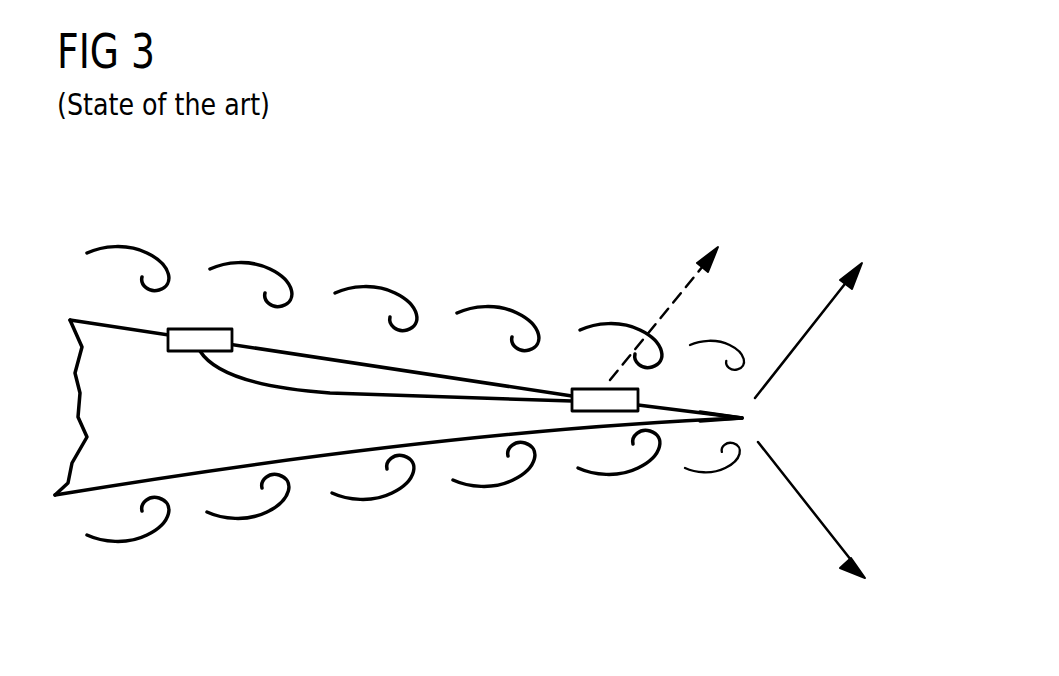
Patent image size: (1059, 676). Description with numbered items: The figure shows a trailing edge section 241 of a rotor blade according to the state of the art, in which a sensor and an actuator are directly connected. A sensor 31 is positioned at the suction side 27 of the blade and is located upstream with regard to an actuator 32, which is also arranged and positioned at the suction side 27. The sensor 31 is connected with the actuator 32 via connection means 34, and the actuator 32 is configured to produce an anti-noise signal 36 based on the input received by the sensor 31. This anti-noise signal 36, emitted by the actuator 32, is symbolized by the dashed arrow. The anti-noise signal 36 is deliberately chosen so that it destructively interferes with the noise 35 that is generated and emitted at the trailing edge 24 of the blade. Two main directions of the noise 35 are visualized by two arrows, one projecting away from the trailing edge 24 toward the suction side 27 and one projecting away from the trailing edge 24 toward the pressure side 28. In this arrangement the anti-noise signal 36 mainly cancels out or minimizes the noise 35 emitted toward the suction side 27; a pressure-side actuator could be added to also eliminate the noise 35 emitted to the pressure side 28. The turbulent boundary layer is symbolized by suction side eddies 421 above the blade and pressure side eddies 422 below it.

The trailing edge section 241 is at (480, 197).
The trailing edge 24 is at (745, 418).
The suction side 27 is at (415, 370).
The pressure side 28 is at (450, 438).
The sensor 31 is at (183, 330).
The actuator 32 is at (583, 388).
The connection means 34 is at (203, 353).
The noise 35 is at (813, 330).
The anti-noise signal 36 is at (687, 283).
The suction side eddies 421 is at (135, 247).
The pressure side eddies 422 is at (137, 545).